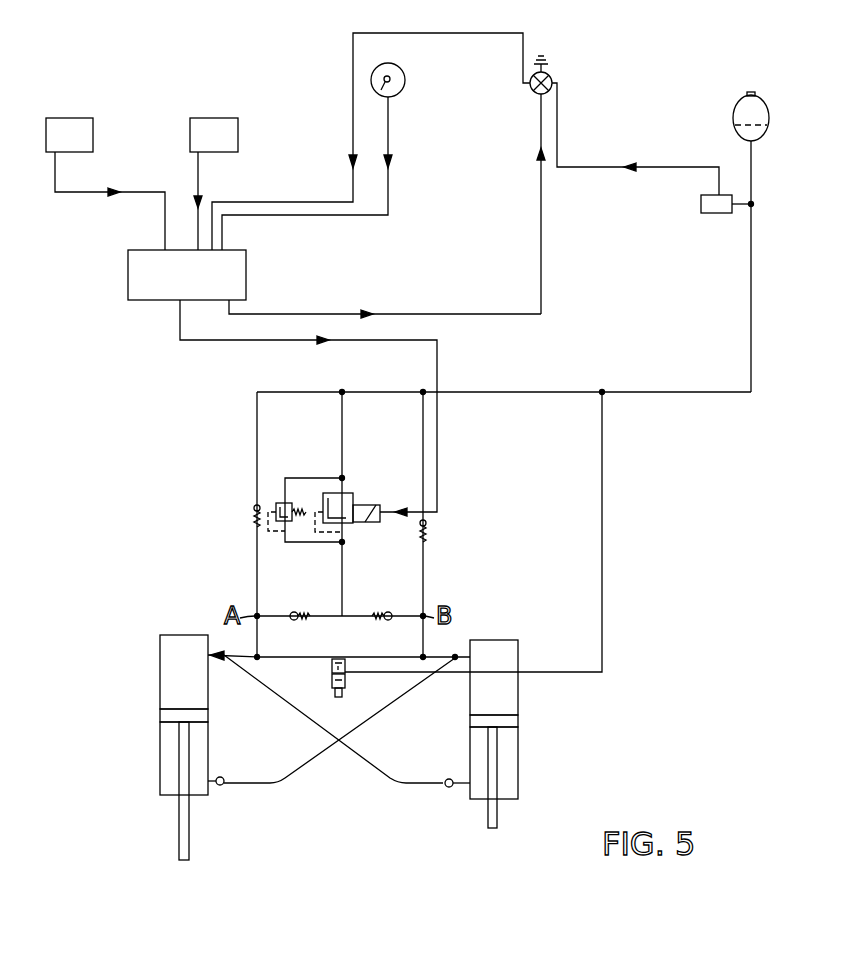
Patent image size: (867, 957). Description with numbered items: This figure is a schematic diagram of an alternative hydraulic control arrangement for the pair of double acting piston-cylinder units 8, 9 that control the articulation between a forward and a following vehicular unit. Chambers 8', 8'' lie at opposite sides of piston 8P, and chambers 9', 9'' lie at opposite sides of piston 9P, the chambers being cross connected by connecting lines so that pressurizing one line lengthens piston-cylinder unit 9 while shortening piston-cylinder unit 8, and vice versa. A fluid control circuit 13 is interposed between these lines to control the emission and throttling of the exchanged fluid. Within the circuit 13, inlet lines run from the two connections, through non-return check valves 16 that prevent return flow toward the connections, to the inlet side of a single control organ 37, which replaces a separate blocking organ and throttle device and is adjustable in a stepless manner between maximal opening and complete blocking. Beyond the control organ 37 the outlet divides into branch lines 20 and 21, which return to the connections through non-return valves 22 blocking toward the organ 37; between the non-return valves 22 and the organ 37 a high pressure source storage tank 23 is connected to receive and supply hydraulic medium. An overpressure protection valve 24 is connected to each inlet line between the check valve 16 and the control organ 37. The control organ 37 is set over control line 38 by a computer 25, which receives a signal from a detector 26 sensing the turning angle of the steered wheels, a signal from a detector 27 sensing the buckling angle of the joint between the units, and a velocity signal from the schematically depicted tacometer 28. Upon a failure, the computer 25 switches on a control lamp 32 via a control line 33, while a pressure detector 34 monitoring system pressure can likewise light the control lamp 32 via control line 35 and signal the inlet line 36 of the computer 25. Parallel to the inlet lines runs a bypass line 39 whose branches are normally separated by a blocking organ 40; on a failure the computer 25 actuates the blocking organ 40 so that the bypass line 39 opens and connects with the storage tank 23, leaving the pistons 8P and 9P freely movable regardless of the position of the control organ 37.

The piston-cylinder unit 8 is at (185, 747).
The chamber 8' is at (184, 672).
The chamber 8'' is at (203, 791).
The piston 8P is at (208, 716).
The piston-cylinder unit 9 is at (522, 734).
The chamber 9' is at (494, 677).
The chamber 9'' is at (514, 777).
The piston 9P is at (516, 721).
The fluid control circuit 13 is at (310, 470).
The non-return check valve 16 is at (293, 611).
The branch line 20 is at (296, 392).
The branch line 21 is at (423, 418).
The non-return valve 22 is at (254, 512).
The high pressure source storage tank 23 is at (760, 97).
The overpressure protection valve 24 is at (275, 505).
The computer 25 is at (200, 288).
The detector 26 is at (93, 135).
The detector 27 is at (238, 135).
The tacometer 28 is at (405, 80).
The control lamp 32 is at (531, 90).
The control line 33 is at (290, 310).
The pressure detector 34 is at (700, 205).
The control line 35 is at (657, 166).
The inlet line 36 is at (353, 55).
The control organ 37 is at (340, 502).
The control line 38 is at (228, 343).
The bypass line 39 is at (292, 660).
The blocking organ 40 is at (331, 680).